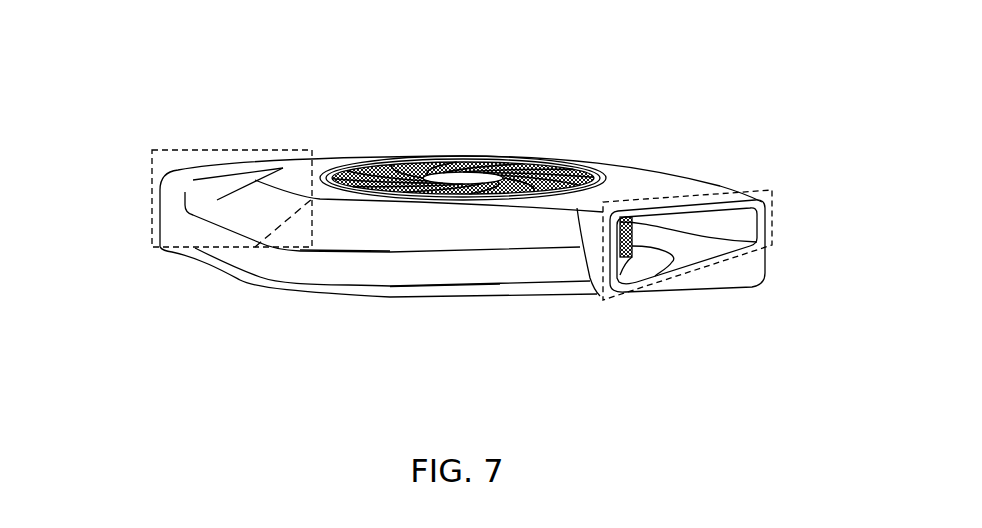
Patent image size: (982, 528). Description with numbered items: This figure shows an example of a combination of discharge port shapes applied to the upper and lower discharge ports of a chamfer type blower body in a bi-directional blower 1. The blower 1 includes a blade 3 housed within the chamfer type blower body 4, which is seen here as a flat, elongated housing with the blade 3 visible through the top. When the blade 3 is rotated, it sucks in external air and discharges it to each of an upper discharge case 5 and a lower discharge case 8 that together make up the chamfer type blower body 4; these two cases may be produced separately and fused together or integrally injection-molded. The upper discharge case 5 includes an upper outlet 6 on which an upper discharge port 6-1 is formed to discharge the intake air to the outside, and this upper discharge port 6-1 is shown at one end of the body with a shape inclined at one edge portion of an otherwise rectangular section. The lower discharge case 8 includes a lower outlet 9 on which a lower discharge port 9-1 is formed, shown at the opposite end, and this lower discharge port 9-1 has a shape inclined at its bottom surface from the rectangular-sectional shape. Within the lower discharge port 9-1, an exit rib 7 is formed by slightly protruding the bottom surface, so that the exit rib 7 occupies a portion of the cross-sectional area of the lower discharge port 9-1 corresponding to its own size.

The bi-directional blower 1 is at (652, 142).
The blade 3 is at (644, 262).
The chamfer type blower body 4 is at (447, 353).
The upper discharge case 5 is at (403, 244).
The upper outlet 6 is at (257, 168).
The upper discharge port 6-1 is at (150, 198).
The exit rib 7 is at (630, 275).
The lower discharge case 8 is at (448, 272).
The lower outlet 9 is at (728, 196).
The lower discharge port 9-1 is at (772, 213).